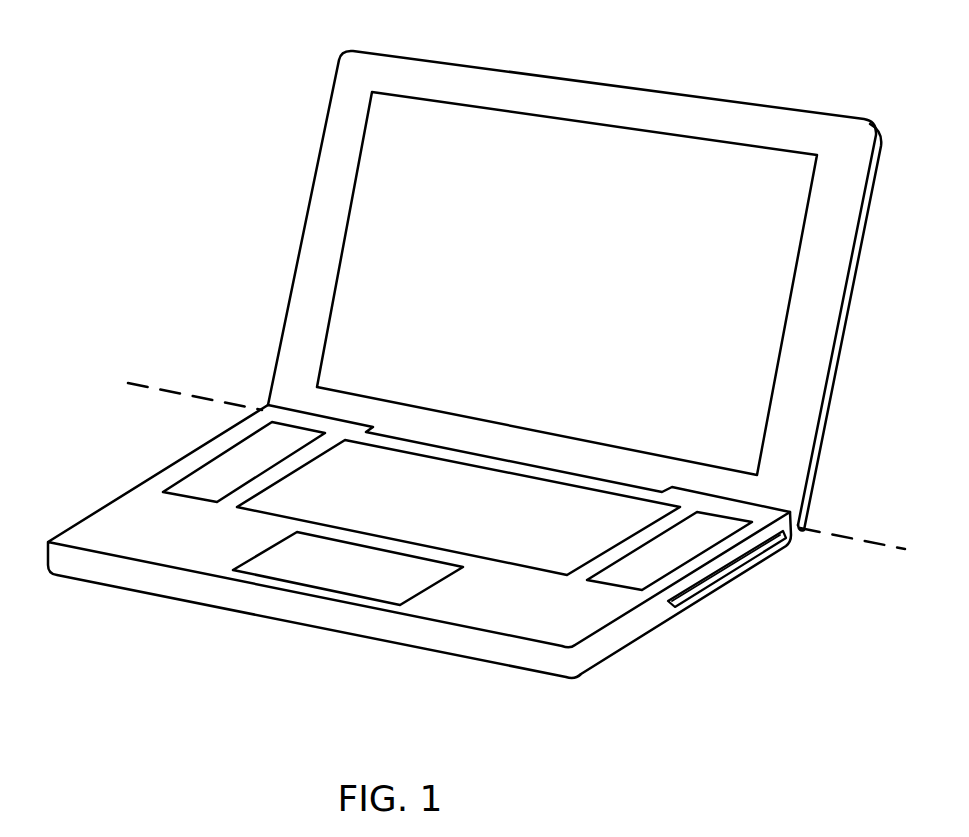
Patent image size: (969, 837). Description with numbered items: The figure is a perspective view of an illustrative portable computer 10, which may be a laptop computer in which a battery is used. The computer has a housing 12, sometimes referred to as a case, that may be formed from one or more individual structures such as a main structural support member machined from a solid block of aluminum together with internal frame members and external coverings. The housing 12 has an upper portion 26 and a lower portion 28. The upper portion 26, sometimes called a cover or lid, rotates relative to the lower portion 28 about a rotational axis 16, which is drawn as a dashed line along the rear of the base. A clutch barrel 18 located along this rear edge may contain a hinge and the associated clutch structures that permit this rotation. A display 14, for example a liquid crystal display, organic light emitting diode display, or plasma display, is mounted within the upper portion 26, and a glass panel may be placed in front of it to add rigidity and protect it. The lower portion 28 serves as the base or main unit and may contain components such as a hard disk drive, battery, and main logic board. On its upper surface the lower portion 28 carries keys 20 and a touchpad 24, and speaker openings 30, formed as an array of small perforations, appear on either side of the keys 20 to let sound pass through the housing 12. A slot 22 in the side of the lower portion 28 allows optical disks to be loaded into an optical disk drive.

The portable computer 10 is at (788, 43).
The housing 12 is at (288, 117).
The display 14 is at (577, 137).
The rotational axis 16 is at (160, 391).
The clutch barrel 18 is at (453, 428).
The keys 20 is at (533, 558).
The slot 22 is at (737, 562).
The touchpad 24 is at (262, 569).
The upper portion 26 is at (797, 434).
The lower portion 28 is at (530, 660).
The speaker openings 30 is at (186, 486).